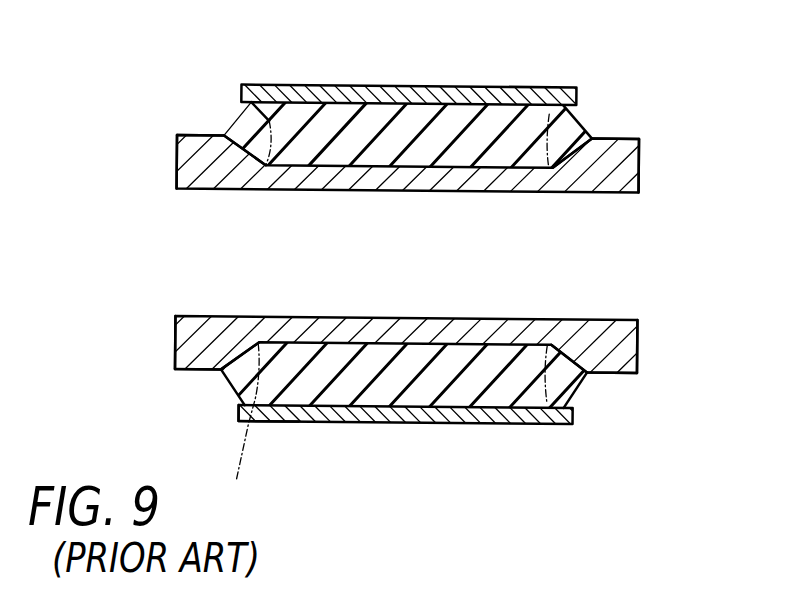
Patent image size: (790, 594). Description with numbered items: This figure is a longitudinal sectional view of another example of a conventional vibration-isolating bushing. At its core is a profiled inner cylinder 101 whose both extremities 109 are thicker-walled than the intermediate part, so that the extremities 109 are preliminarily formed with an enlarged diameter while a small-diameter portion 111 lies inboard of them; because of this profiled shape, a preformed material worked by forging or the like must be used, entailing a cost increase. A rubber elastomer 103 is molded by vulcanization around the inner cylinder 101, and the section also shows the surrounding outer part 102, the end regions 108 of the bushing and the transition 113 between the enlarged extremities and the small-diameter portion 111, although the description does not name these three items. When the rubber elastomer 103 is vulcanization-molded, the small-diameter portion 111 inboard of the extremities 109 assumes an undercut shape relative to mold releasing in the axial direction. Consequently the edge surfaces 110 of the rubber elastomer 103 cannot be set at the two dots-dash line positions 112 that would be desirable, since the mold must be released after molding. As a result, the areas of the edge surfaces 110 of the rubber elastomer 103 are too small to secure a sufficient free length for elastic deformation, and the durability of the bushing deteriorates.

The profiled inner cylinder 101 is at (363, 166).
The outer sleeve 102 is at (368, 423).
The rubber elastomer 103 is at (492, 388).
The end portion of inner tube 108 is at (183, 343).
The extremities of the inner cylinder 109 is at (215, 165).
The edge surfaces of the rubber elastomer 110 is at (243, 386).
The small-diameter portion 111 is at (307, 423).
The two dots-dash line positions 112 is at (383, 314).
The tapered chamfer surface 113 is at (575, 390).